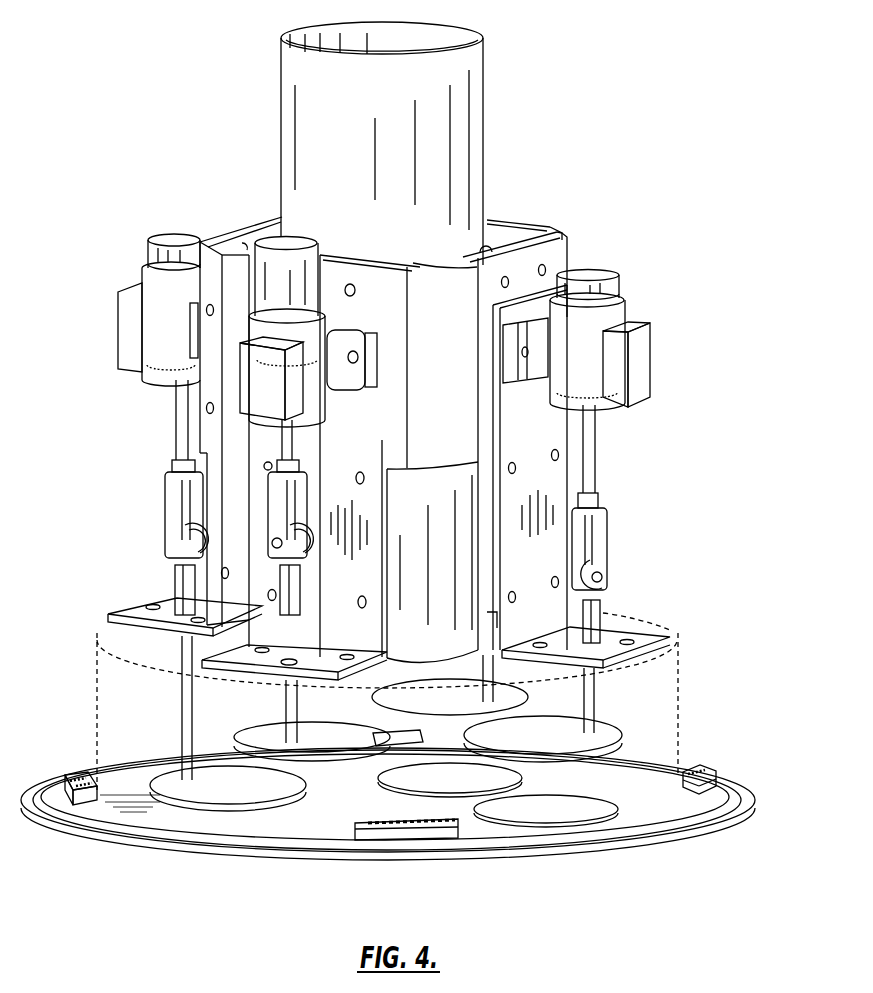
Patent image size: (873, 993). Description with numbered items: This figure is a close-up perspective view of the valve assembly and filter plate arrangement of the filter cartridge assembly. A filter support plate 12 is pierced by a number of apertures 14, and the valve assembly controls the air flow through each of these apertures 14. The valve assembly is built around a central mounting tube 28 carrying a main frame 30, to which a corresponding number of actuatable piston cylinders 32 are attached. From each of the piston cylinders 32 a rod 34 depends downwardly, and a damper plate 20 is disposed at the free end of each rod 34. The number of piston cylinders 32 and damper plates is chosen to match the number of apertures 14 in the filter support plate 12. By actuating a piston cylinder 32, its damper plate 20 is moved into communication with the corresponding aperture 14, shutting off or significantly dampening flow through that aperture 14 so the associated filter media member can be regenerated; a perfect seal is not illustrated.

The filter support plate 12 is at (703, 813).
The apertures 14 is at (193, 805).
The damper plate 20 is at (607, 728).
The central mounting tube 28 is at (462, 125).
The main frame 30 is at (558, 257).
The actuatable piston cylinders 32 is at (610, 289).
The rod 34 is at (587, 470).